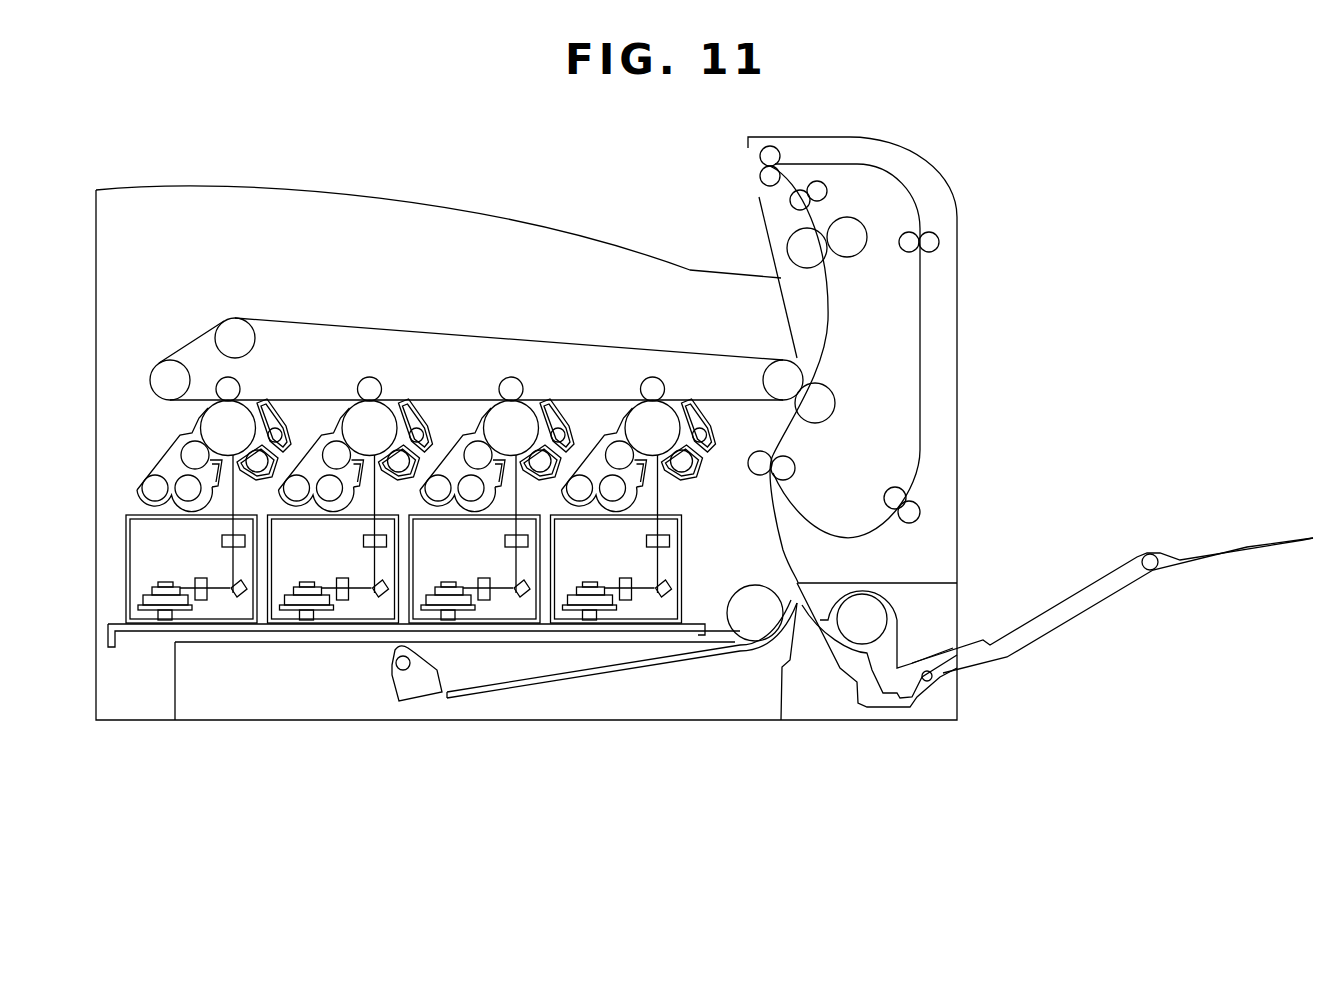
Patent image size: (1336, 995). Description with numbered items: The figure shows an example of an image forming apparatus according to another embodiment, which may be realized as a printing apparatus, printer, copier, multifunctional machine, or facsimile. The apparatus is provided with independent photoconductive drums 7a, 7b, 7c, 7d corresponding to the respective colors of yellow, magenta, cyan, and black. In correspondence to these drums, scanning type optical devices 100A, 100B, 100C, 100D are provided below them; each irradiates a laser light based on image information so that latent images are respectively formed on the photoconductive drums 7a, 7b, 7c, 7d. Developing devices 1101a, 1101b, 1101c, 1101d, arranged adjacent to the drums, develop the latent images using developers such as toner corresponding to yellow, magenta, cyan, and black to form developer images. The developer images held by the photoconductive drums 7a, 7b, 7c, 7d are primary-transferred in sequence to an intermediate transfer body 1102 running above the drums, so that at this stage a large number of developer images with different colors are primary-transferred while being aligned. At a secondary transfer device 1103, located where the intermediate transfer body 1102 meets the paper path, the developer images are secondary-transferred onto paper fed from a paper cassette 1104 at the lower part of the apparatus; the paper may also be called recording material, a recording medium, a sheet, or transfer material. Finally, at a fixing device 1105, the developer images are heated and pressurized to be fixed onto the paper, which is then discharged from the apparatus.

The photoconductive drum 7a is at (207, 407).
The photoconductive drum 7b is at (389, 405).
The photoconductive drum 7c is at (530, 405).
The photoconductive drum 7d is at (672, 405).
The developing device 1101a is at (165, 457).
The developing device 1101b is at (325, 432).
The developing device 1101c is at (467, 432).
The developing device 1101d is at (609, 432).
The scanning type optical device 100A is at (141, 626).
The scanning type optical device 100B is at (286, 626).
The scanning type optical device 100C is at (458, 626).
The scanning type optical device 100D is at (600, 626).
The intermediate transfer body 1102 is at (720, 353).
The secondary transfer device 1103 is at (835, 408).
The paper cassette 1104 is at (680, 660).
The fixing device 1105 is at (867, 228).